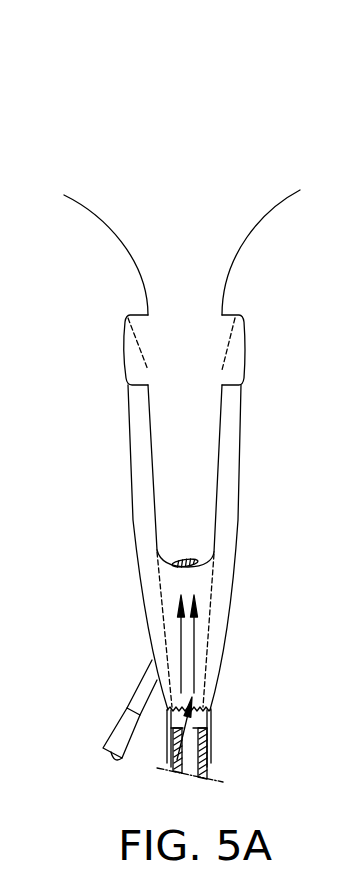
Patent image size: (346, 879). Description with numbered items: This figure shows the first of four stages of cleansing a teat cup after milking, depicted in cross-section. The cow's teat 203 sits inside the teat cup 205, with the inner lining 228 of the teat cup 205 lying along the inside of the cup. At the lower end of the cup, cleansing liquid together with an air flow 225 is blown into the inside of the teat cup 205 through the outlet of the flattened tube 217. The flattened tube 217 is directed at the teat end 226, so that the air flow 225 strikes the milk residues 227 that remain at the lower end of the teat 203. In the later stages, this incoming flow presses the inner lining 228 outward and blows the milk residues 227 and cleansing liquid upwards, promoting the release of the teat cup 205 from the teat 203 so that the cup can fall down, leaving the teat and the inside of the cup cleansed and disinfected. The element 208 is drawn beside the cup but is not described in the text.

The arms 203 is at (232, 250).
The arm member 205 is at (242, 417).
The slot bottom 226 is at (220, 503).
The pivot pin 227 is at (183, 567).
The channel 228 is at (210, 627).
The flow passage 225 is at (197, 662).
The sensor probe 208 is at (142, 688).
The nozzle tip 217 is at (182, 757).